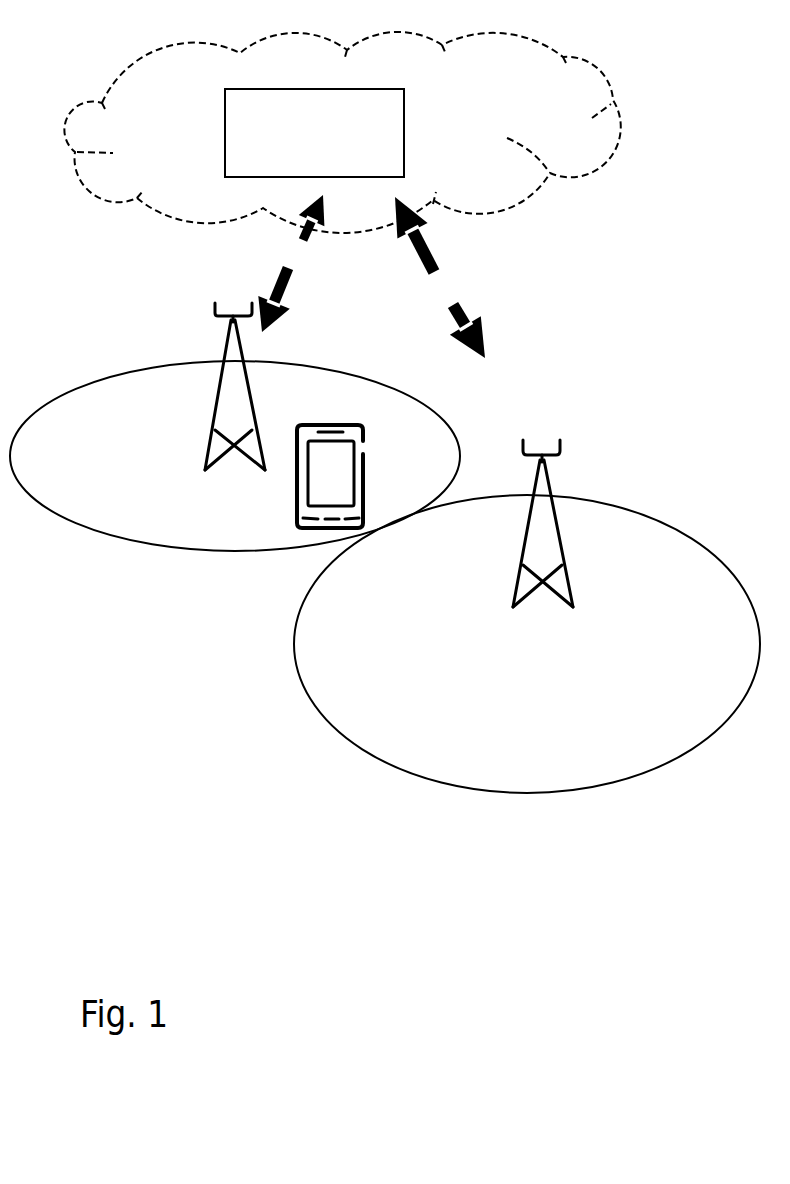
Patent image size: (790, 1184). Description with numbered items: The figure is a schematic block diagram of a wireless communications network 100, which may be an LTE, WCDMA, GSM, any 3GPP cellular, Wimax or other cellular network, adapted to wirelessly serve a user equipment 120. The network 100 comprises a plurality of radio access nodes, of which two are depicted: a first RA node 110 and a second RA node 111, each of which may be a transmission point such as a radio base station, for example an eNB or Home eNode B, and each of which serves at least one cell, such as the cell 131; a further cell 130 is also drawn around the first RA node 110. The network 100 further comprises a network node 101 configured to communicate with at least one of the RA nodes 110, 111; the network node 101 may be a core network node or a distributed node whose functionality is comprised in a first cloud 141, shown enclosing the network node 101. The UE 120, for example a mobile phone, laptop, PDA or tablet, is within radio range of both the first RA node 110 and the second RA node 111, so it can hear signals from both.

The communications network 100 is at (151, 679).
The network node 101 is at (338, 153).
The first RA node 110 is at (232, 337).
The second RA node 111 is at (568, 578).
The user equipment 120 is at (297, 477).
The first cell 130 is at (137, 472).
The cell 131 is at (577, 665).
The first cloud 141 is at (183, 153).